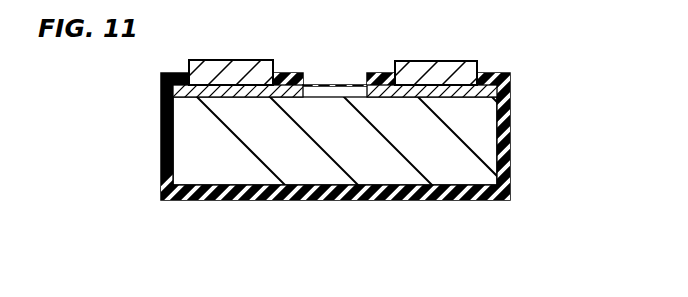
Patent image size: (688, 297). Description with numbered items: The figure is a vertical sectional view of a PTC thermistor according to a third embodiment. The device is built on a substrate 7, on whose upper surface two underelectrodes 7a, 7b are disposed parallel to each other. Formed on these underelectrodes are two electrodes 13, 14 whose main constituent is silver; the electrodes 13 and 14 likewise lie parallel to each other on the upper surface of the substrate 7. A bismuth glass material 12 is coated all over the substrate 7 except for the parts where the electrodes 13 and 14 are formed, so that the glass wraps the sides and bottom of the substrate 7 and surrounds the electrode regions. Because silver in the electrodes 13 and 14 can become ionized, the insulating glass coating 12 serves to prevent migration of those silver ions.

The substrate 7 is at (488, 161).
The underelectrode 7a is at (213, 98).
The underelectrode 7b is at (442, 98).
The bismuth glass material 12 is at (510, 102).
The electrode 13 is at (237, 60).
The electrode 14 is at (425, 62).